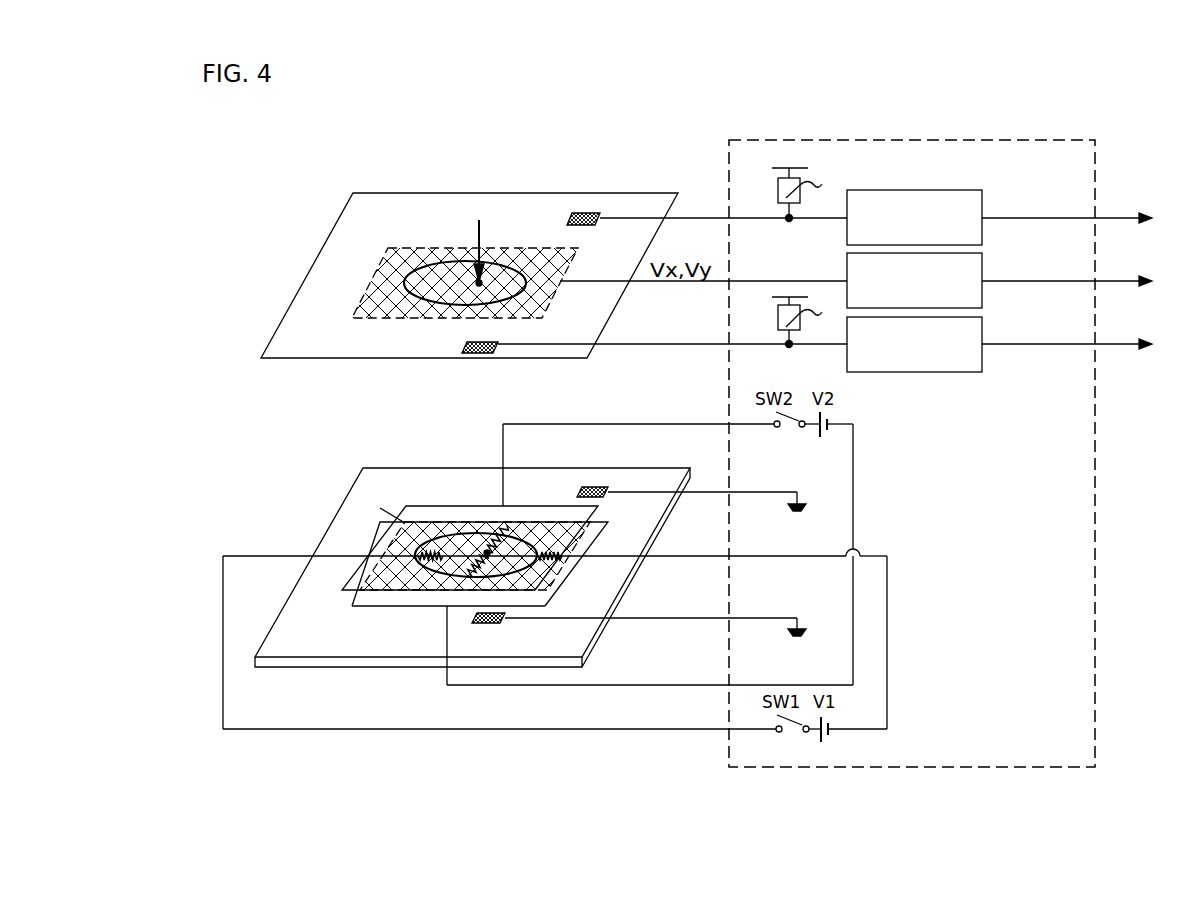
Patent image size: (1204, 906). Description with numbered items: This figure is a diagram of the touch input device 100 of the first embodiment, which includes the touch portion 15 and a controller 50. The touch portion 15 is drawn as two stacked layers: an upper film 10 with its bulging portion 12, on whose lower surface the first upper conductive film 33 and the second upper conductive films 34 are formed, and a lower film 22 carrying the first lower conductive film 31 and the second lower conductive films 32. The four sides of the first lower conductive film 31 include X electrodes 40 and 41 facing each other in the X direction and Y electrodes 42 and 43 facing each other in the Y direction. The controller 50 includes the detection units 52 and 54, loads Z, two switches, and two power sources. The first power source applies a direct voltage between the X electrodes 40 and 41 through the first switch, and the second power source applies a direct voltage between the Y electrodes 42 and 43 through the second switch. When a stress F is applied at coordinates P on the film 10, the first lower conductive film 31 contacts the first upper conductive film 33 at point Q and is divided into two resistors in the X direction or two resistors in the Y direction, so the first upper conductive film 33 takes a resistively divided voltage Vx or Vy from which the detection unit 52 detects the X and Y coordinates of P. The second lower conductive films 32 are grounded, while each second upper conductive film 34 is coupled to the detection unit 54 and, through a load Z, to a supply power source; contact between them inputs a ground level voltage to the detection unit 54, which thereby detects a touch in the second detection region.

The film 10 is at (390, 193).
The bulging portion 12 is at (458, 273).
The touch portion 15 is at (623, 169).
The lower film 22 is at (383, 468).
The first lower conductive film 31 is at (465, 522).
The second lower conductive film 32 is at (577, 492).
The first upper conductive film 33 is at (507, 248).
The second upper conductive film 34 is at (587, 213).
The X electrode 40 is at (367, 540).
The X electrode 41 is at (602, 530).
The Y electrode 42 is at (433, 506).
The Y electrode 43 is at (373, 606).
The controller 50 is at (1067, 138).
The detection unit 52 is at (982, 268).
The detection unit 54 is at (982, 207).
The touch input device 100 is at (804, 112).